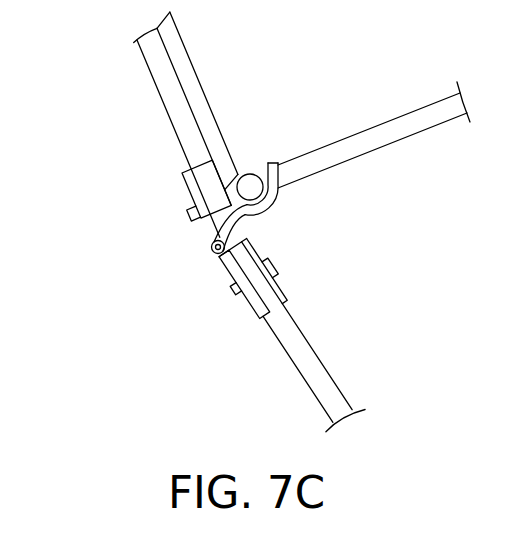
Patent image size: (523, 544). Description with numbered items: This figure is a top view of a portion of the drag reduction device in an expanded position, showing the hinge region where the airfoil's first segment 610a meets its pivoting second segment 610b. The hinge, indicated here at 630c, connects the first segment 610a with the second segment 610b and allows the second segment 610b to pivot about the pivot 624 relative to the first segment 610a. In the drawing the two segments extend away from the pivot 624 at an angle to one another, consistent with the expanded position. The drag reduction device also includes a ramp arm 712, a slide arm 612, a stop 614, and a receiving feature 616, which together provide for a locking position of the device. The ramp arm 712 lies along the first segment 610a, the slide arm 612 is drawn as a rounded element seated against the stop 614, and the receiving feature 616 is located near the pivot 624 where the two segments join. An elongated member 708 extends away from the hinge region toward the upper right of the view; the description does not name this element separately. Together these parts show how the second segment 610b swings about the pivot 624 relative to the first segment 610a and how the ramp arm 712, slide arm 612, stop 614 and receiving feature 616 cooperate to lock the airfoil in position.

The first segment 610a is at (157, 88).
The second segment 610b is at (297, 362).
The ramp arm 712 is at (185, 65).
The slide arm 612 is at (247, 183).
The rod 708 is at (395, 128).
The stop 614 is at (270, 203).
The receiving feature 616 is at (237, 208).
The pivot 624 is at (217, 256).
The pivot axis 630c is at (206, 257).